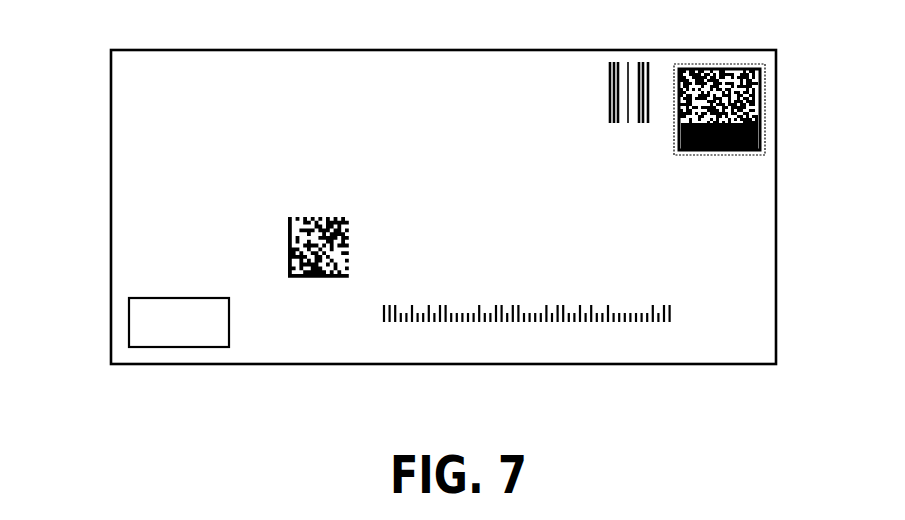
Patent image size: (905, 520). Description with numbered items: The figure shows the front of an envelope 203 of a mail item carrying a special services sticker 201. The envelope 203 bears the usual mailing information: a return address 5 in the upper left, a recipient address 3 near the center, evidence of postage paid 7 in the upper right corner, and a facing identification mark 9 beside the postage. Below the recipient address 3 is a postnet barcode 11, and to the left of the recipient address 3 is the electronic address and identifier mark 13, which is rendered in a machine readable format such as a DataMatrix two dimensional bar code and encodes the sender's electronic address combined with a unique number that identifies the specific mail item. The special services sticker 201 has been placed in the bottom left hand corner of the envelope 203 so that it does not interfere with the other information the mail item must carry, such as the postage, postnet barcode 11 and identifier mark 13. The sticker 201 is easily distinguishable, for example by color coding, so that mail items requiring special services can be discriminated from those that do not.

The envelope 203 is at (110, 227).
The return address 5 is at (325, 89).
The facing identification mark (FIM) 9 is at (618, 94).
The evidence of postage paid 7 is at (749, 157).
The recipient address 3 is at (503, 213).
The electronic address and identifier mark (EAIM) 13 is at (285, 268).
The postnet barcode 11 is at (649, 313).
The special services sticker (SSS) 201 is at (181, 347).